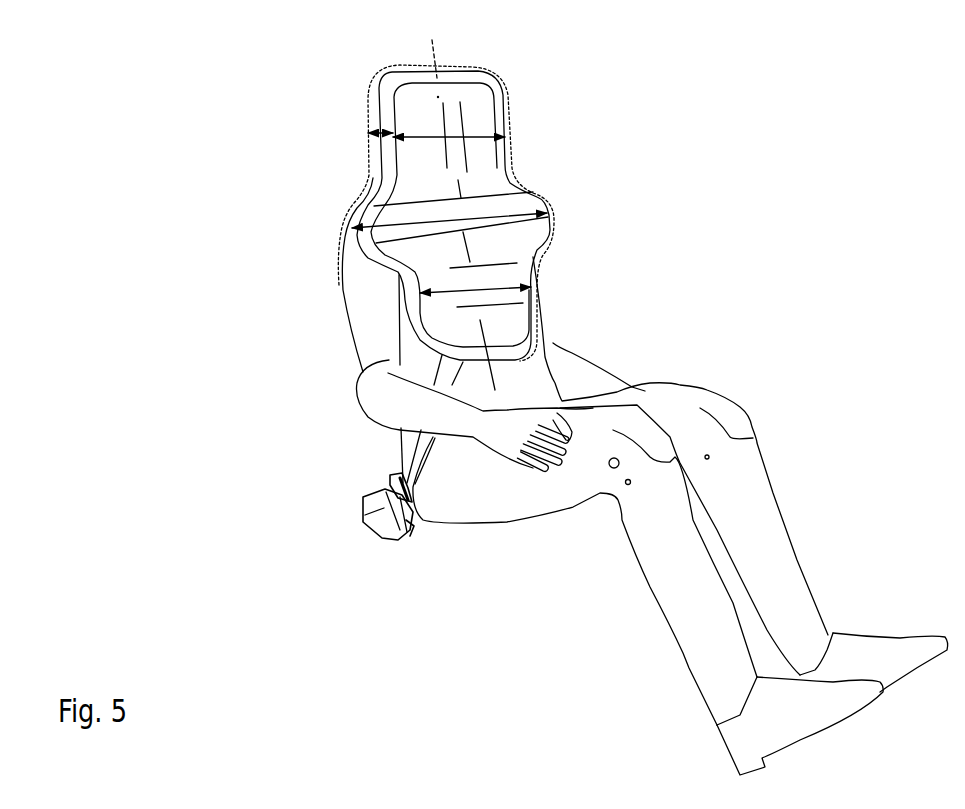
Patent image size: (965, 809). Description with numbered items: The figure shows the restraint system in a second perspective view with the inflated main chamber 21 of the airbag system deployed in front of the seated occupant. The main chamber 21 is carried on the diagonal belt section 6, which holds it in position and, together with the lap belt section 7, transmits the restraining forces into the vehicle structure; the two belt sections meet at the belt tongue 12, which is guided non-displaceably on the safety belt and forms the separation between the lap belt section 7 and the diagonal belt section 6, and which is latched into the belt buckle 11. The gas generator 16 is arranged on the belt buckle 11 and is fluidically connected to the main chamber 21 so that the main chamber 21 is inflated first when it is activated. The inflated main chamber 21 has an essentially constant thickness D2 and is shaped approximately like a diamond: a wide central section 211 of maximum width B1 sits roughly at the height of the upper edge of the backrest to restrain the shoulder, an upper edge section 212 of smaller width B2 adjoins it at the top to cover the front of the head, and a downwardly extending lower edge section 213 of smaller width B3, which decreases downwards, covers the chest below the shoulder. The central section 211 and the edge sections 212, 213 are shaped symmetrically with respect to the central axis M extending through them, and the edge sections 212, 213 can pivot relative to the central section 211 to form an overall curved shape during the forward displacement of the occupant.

The main chamber 21 is at (352, 160).
The central section 211 is at (493, 207).
The upper edge section 212 is at (490, 152).
The lower edge section 213 is at (507, 283).
The diagonal belt section 6 is at (500, 361).
The lap belt section 7 is at (437, 440).
The belt buckle 11 is at (381, 512).
The belt tongue 12 is at (390, 480).
The gas generator 16 is at (413, 525).
The central axis M is at (437, 50).
The maximum width of the central section B1 is at (449, 211).
The width of the upper edge section B2 is at (449, 129).
The width of the lower edge section B3 is at (475, 278).
The thickness of the main chamber D2 is at (386, 131).